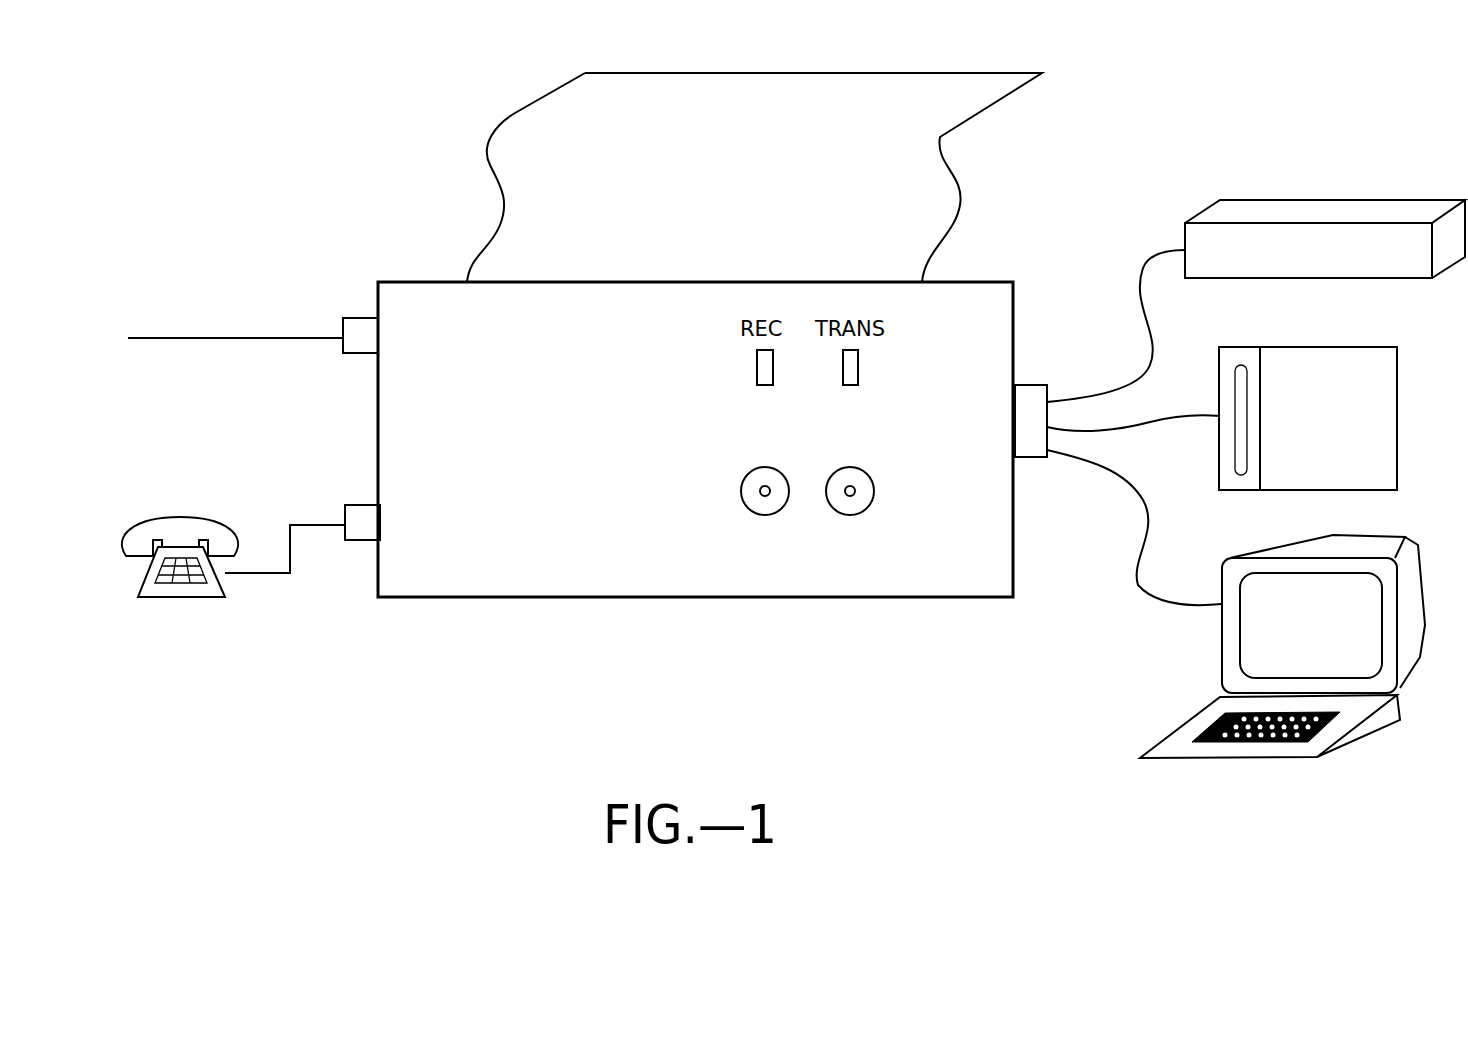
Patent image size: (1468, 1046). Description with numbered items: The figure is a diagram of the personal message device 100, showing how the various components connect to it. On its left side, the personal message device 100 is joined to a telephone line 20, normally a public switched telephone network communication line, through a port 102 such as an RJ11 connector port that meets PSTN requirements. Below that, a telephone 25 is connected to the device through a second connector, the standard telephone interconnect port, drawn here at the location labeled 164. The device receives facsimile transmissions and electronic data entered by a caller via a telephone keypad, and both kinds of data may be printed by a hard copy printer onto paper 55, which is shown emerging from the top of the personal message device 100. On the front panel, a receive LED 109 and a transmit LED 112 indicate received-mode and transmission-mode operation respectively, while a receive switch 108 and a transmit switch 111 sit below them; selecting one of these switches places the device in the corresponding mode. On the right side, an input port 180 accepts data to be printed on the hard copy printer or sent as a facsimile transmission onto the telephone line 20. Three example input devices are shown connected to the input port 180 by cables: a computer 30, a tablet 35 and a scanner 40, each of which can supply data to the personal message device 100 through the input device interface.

The telephone line 20 is at (257, 338).
The telephone 25 is at (180, 598).
The computer 30 is at (1355, 555).
The tablet 35 is at (1357, 347).
The scanner 40 is at (1270, 205).
The paper 55 is at (513, 115).
The personal message device 100 is at (537, 598).
The port 102 is at (357, 318).
The receive switch 108 is at (765, 515).
The receive LED 109 is at (757, 372).
The transmit switch 111 is at (855, 515).
The transmit LED 112 is at (858, 372).
The telephone connector 164 is at (366, 540).
The input port 180 is at (1028, 385).